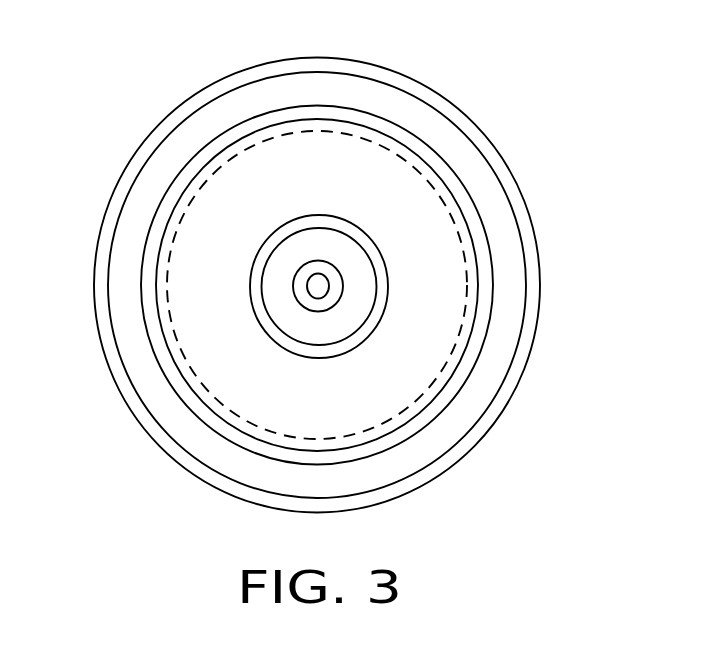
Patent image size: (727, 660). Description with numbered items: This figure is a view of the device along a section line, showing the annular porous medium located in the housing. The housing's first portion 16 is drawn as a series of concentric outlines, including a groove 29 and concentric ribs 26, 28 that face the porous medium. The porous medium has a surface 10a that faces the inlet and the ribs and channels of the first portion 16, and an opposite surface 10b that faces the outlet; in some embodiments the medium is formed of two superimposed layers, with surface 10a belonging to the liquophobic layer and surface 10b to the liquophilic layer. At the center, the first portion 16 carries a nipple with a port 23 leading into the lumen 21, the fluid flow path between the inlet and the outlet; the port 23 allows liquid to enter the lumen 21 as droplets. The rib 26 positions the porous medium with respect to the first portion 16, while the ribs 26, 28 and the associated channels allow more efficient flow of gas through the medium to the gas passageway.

The first portion 16 is at (410, 73).
The groove 29 is at (183, 143).
The rib 28 is at (437, 158).
The surface 10b is at (430, 257).
The surface 10a is at (270, 403).
The rib 26 is at (255, 279).
The lumen 21 is at (343, 248).
The port 23 is at (322, 288).